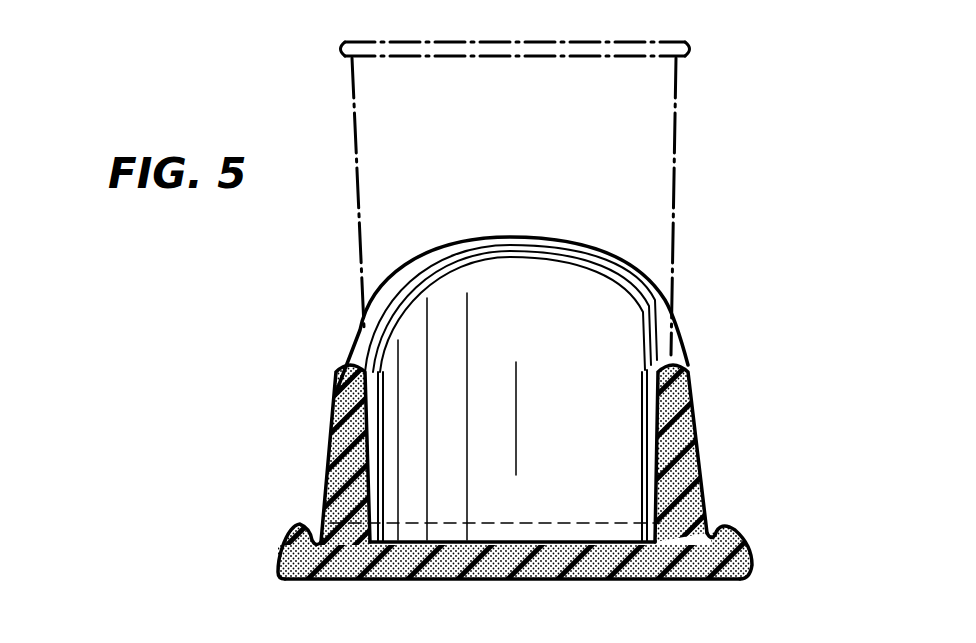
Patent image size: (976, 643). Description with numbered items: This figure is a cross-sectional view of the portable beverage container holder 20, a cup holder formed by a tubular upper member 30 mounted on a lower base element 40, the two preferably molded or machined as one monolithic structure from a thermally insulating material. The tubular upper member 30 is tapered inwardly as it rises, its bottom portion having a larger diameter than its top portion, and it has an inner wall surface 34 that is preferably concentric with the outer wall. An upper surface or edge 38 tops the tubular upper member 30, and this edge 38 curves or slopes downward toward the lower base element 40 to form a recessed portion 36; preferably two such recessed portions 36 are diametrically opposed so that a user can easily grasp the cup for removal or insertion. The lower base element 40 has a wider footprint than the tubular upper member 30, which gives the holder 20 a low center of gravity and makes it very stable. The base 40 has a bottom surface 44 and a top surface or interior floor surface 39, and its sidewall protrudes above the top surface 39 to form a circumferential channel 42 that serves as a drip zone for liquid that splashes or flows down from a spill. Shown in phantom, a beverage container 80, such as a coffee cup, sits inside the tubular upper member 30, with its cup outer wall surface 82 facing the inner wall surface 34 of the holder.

The beverage container holder 20 is at (199, 345).
The tubular upper member 30 is at (525, 420).
The inner wall surface 34 is at (372, 480).
The recessed portion 36 is at (672, 357).
The upper surface or edge 38 is at (503, 237).
The top surface or interior floor surface 39 is at (577, 541).
The lower base element 40 is at (287, 551).
The circumferential channel 42 is at (699, 431).
The bottom surface 44 is at (488, 537).
The beverage container 80 is at (575, 198).
The cup outer wall surface 82 is at (667, 252).